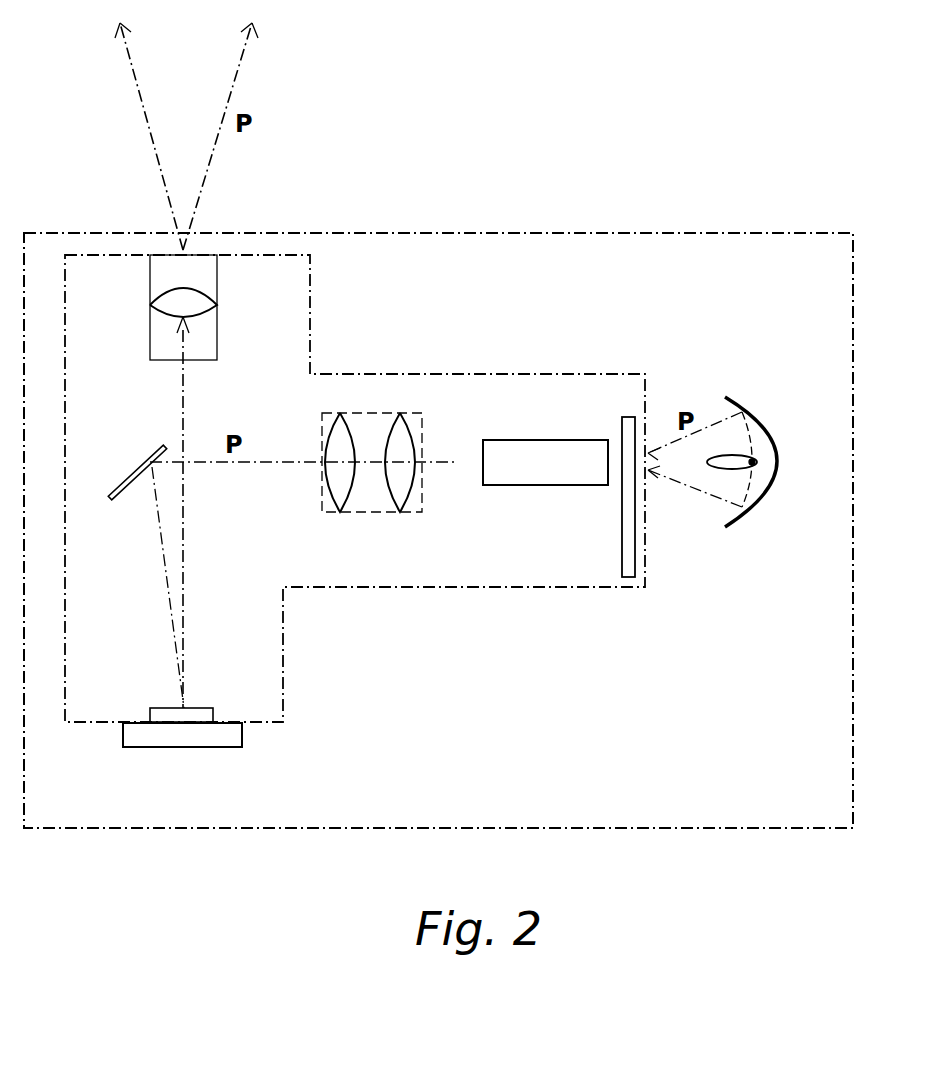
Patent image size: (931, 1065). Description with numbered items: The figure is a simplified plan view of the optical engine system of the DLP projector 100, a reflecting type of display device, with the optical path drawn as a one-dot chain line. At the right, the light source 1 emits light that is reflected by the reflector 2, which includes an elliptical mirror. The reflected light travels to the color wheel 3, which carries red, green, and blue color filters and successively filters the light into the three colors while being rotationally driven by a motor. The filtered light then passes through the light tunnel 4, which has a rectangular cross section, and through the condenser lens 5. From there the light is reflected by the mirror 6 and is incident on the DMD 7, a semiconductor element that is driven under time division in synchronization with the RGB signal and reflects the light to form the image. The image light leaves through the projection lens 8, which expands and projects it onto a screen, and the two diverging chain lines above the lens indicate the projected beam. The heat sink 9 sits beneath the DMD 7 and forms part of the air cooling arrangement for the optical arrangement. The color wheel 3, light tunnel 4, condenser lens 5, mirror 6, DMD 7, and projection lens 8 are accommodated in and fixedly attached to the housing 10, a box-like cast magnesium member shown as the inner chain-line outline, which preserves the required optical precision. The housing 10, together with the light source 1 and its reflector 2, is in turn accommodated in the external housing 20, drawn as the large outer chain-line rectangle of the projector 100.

The light source 1 is at (763, 470).
The reflector 2 is at (758, 428).
The color wheel 3 is at (637, 557).
The light tunnel 4 is at (538, 485).
The condenser lens 5 is at (368, 512).
The mirror 6 is at (132, 475).
The DMD 7 is at (202, 708).
The projection lens 8 is at (217, 323).
The heat sink 9 is at (208, 747).
The housing 10 is at (437, 374).
The external housing 20 is at (678, 233).
The projector 100 is at (498, 182).